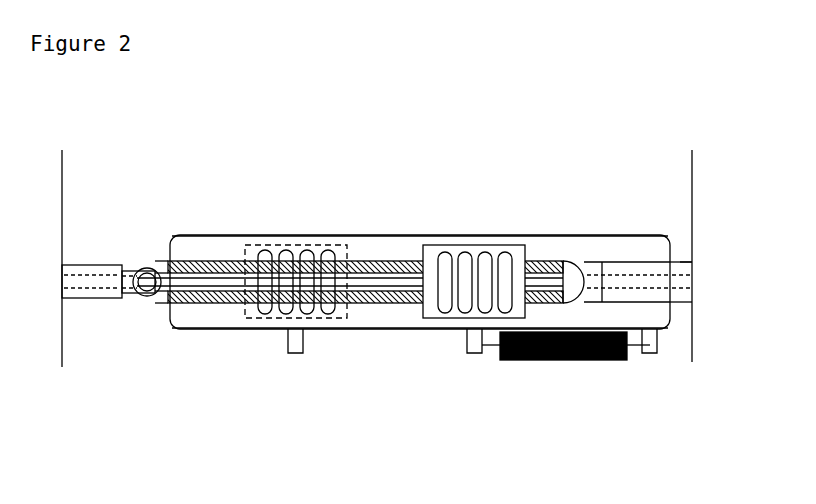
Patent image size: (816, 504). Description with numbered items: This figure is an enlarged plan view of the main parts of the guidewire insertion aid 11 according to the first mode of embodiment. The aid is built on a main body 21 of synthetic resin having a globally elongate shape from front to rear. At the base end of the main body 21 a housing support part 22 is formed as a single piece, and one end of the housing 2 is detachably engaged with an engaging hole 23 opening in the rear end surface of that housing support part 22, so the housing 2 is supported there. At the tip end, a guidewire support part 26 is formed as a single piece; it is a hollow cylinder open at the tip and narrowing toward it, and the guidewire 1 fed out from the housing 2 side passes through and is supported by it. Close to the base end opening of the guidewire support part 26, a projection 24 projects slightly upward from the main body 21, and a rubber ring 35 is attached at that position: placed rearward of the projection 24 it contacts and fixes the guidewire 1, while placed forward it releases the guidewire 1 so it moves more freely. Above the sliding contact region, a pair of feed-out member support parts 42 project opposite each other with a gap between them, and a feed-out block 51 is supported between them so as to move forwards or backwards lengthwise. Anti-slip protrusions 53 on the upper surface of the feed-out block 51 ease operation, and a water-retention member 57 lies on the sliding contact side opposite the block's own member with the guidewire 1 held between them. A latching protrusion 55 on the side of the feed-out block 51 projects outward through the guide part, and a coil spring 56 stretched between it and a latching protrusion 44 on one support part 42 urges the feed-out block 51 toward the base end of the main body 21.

The actuator 11 is at (127, 162).
The guidewire 1 is at (83, 303).
The housing 2 is at (682, 262).
The main body 21 is at (385, 330).
The housing support part 22 is at (651, 257).
The engaging hole 23 is at (630, 270).
The projection 24 is at (130, 270).
The guidewire support part 26 is at (78, 266).
The rubber ring 35 is at (148, 297).
The feed-out member support parts 42 is at (208, 245).
The feed-out block 51 is at (300, 246).
The anti-slip protrusions 53 is at (465, 252).
The latching protrusion 55 is at (298, 353).
The coil spring 56 is at (543, 362).
The water-retention member 57 is at (383, 260).
The latching protrusion 44 is at (648, 353).